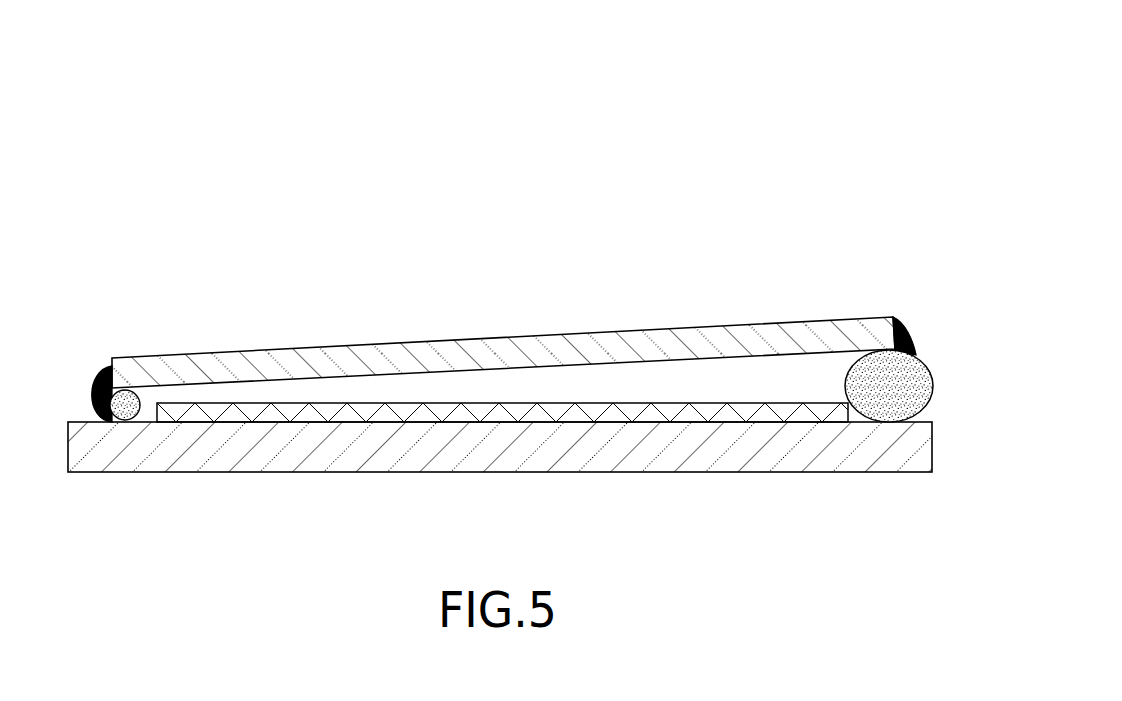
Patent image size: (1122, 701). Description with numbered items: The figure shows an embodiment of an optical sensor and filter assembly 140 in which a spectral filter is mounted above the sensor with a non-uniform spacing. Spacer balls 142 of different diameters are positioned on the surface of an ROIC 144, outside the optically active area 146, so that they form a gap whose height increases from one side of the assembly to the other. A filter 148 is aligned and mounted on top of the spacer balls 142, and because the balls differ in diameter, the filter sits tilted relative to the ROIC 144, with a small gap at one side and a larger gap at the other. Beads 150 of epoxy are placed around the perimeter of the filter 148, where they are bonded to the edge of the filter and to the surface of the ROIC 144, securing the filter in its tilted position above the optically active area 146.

The optical sensor and filter assembly 140 is at (555, 295).
The spacer balls 142 is at (93, 370).
The ROIC 144 is at (932, 453).
The optically active area 146 is at (632, 413).
The filter 148 is at (465, 338).
The beads of epoxy 150 is at (913, 325).